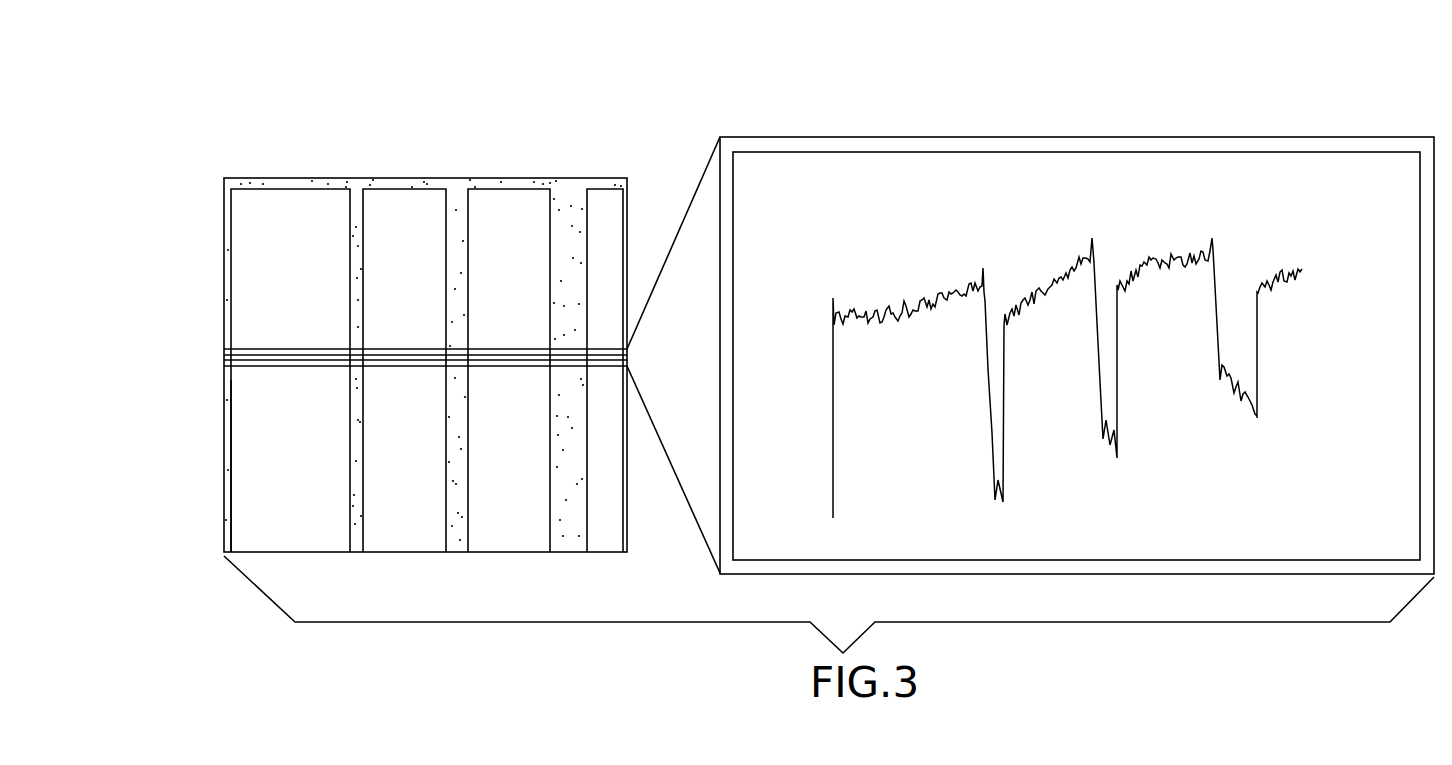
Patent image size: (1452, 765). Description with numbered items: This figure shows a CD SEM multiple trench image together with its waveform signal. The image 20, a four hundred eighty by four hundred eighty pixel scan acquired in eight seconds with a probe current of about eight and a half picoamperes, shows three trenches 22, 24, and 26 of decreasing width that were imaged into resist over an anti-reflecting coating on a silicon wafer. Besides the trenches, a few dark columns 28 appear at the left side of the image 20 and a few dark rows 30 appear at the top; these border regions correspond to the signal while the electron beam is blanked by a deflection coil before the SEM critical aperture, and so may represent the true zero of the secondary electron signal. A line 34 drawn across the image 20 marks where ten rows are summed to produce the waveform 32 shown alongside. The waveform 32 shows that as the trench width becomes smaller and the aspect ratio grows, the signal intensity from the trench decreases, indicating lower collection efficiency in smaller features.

The image 20 is at (187, 210).
The trench 22 is at (359, 195).
The trench 24 is at (456, 195).
The trench 26 is at (568, 198).
The dark columns 28 is at (231, 445).
The dark rows 30 is at (312, 178).
The waveform 32 is at (1024, 120).
The line 34 is at (224, 356).